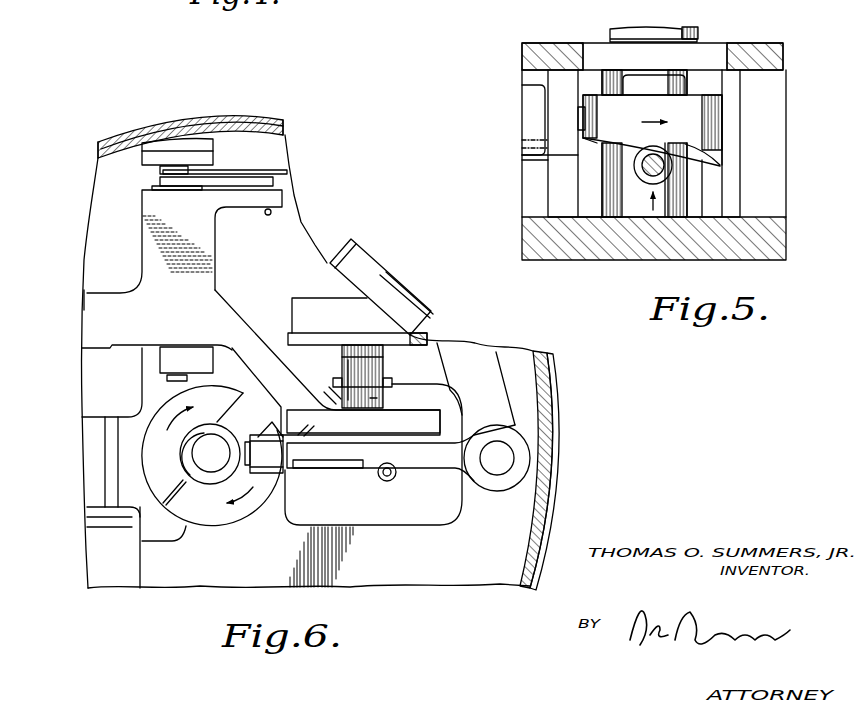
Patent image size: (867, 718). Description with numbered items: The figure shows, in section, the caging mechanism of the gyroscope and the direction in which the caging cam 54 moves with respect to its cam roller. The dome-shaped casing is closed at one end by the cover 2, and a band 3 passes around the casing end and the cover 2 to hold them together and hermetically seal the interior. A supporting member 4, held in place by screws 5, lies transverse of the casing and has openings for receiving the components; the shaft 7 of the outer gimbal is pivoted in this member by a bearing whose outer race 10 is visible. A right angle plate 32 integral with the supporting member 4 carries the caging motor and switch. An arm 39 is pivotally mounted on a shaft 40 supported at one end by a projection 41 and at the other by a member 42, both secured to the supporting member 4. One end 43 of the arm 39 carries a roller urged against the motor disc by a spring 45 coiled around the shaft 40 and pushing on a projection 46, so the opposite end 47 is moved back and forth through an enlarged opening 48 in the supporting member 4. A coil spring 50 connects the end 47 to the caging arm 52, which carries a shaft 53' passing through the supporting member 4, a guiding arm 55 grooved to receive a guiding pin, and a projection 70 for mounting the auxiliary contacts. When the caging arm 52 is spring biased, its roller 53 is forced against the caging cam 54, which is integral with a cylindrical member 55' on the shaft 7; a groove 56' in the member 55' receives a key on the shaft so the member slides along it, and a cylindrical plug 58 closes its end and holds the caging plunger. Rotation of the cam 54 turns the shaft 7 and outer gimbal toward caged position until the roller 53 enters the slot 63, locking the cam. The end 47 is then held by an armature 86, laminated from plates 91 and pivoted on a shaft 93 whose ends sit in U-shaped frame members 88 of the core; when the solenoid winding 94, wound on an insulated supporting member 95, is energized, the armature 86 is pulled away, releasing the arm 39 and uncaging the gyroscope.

In FIG. 6, the cover 2 is at (108, 145).
In FIG. 5, the cover 2 is at (777, 240).
In FIG. 6, the band 3 is at (140, 125).
In FIG. 6, the supporting member 4 is at (302, 223).
In FIG. 5, the supporting member 4 is at (553, 43).
In FIG. 6, the screws 5 is at (140, 122).
In FIG. 5, the shaft 7 is at (657, 33).
In FIG. 5, the outer race 10 is at (702, 36).
In FIG. 6, the right angle plate 32 is at (107, 442).
In FIG. 6, the arm 39 is at (233, 310).
In FIG. 5, the arm 39 is at (535, 157).
In FIG. 6, the shaft 40 is at (173, 176).
In FIG. 6, the projection 41 is at (203, 366).
In FIG. 5, the projection 41 is at (557, 105).
In FIG. 6, the member 42 is at (180, 148).
In FIG. 6, the end of arm 43 is at (93, 303).
In FIG. 6, the spring 45 is at (277, 172).
In FIG. 6, the projection 46 is at (247, 202).
In FIG. 6, the end of arm 47 is at (437, 418).
In FIG. 6, the enlarged opening 48 is at (440, 523).
In FIG. 5, the enlarged opening 48 is at (588, 43).
In FIG. 6, the coil spring 50 is at (387, 481).
In FIG. 6, the caging arm 52 is at (433, 456).
In FIG. 6, the roller 53 is at (277, 469).
In FIG. 5, the roller 53 is at (652, 176).
In FIG. 6, the shaft 53' is at (537, 458).
In FIG. 6, the caging cam 54 is at (217, 517).
In FIG. 5, the caging cam 54 is at (652, 143).
In FIG. 6, the guiding arm 55 is at (534, 410).
In FIG. 6, the cylindrical member 55' is at (175, 456).
In FIG. 5, the cylindrical member 55' is at (680, 215).
In FIG. 6, the groove 56' is at (188, 453).
In FIG. 6, the cylindrical plug 58 is at (210, 466).
In FIG. 6, the slot 63 is at (233, 412).
In FIG. 5, the slot 63 is at (603, 141).
In FIG. 6, the projection 70 is at (320, 468).
In FIG. 6, the armature 86 is at (380, 398).
In FIG. 6, the U-shaped frame members 88 is at (383, 360).
In FIG. 6, the plates 91 is at (348, 365).
In FIG. 6, the shaft 93 is at (392, 378).
In FIG. 6, the solenoid winding 94 is at (373, 318).
In FIG. 6, the insulated supporting member 95 is at (307, 338).